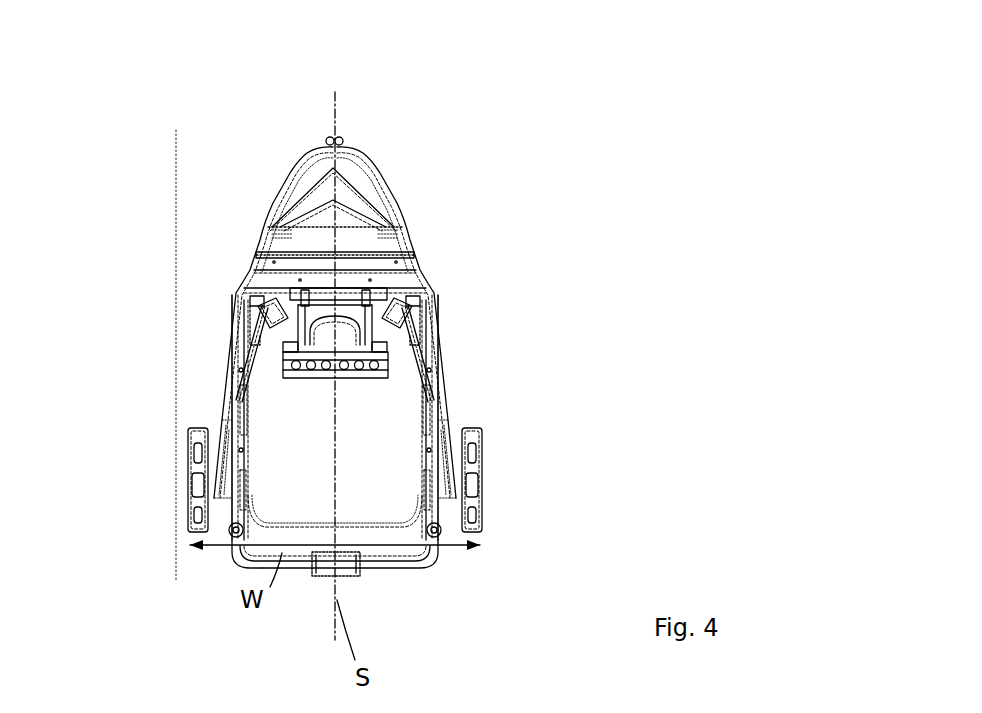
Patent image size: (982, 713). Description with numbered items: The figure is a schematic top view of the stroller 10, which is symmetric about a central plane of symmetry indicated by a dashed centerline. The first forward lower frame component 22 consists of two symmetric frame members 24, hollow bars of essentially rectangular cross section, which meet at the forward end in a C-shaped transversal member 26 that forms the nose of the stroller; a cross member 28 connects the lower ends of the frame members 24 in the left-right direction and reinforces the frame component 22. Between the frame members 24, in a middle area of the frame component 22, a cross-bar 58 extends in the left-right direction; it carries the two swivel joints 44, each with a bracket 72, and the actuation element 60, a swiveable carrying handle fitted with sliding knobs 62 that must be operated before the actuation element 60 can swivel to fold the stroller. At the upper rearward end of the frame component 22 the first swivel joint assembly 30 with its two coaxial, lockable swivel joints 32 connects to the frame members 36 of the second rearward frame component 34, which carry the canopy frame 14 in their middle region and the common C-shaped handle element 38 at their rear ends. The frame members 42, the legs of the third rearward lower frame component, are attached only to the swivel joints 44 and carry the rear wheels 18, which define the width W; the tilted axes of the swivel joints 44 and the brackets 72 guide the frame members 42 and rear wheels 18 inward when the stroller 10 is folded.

The stroller 10 is at (546, 105).
The canopy frame 14 is at (270, 521).
The rear wheels 18 is at (188, 470).
The first forward lower frame component 22 is at (244, 234).
The frame members 24 is at (258, 265).
The transversal member 26 is at (393, 158).
The cross member 28 is at (400, 243).
The first swivel joint assembly 30 is at (436, 348).
The swivel joints 32 is at (240, 363).
The second rearward frame component 34 is at (212, 562).
The frame members 36 is at (231, 510).
The handle element 38 is at (403, 567).
The frame members 42 is at (250, 342).
The swivel joints 44 is at (257, 310).
The cross-bar 58 is at (395, 290).
The actuation element 60 is at (328, 352).
The sliding knobs 62 is at (360, 343).
The bracket 72 is at (265, 298).